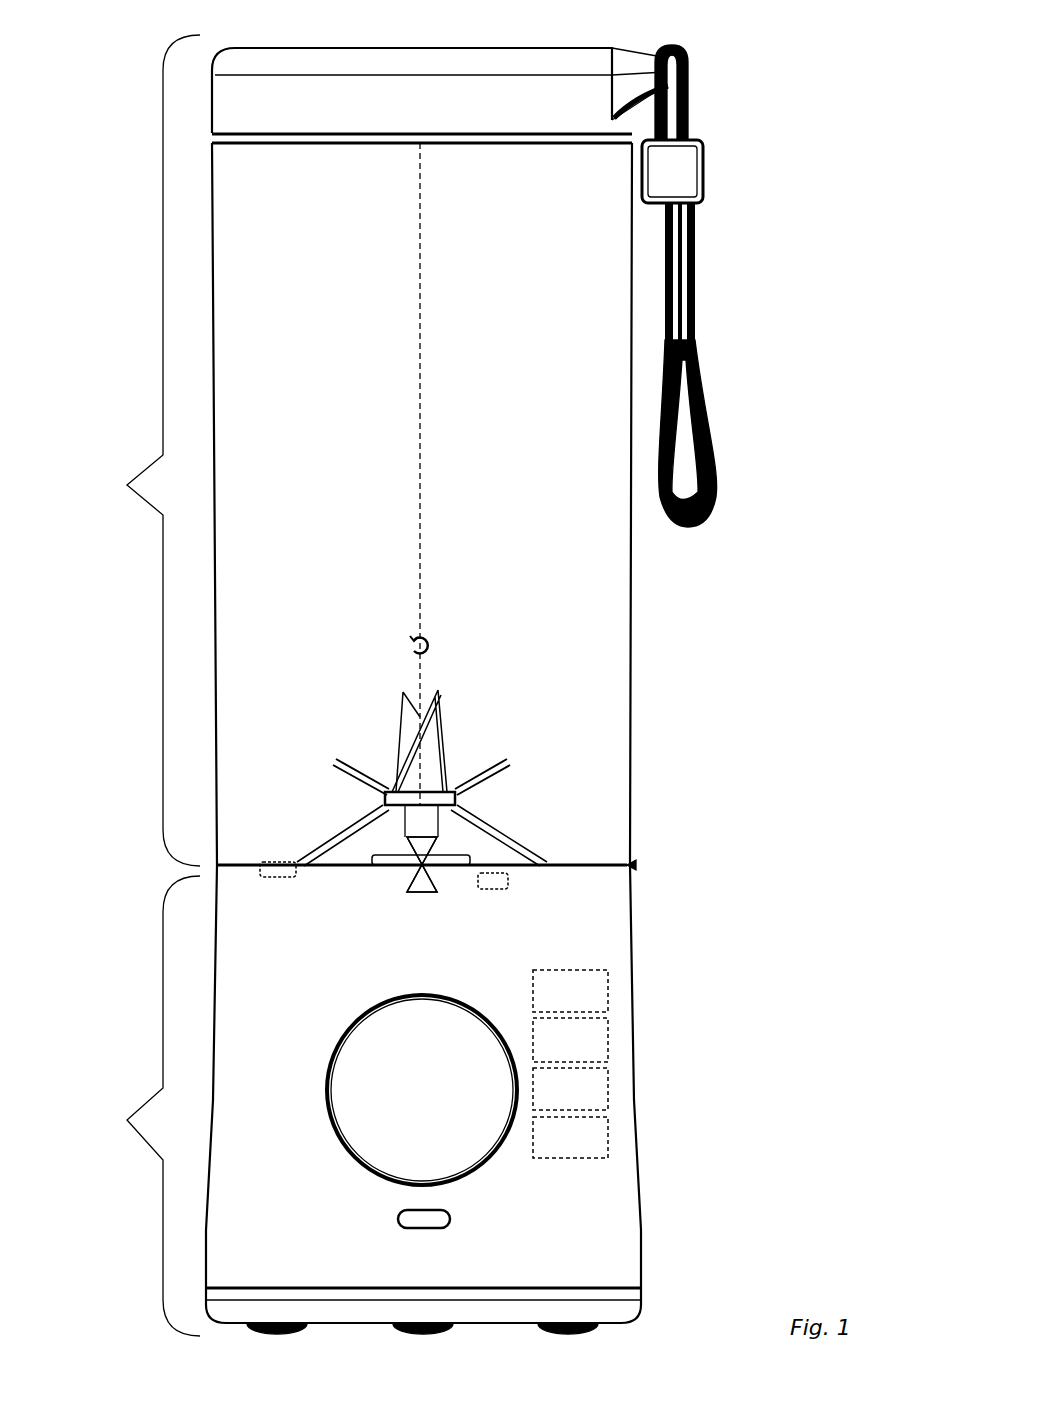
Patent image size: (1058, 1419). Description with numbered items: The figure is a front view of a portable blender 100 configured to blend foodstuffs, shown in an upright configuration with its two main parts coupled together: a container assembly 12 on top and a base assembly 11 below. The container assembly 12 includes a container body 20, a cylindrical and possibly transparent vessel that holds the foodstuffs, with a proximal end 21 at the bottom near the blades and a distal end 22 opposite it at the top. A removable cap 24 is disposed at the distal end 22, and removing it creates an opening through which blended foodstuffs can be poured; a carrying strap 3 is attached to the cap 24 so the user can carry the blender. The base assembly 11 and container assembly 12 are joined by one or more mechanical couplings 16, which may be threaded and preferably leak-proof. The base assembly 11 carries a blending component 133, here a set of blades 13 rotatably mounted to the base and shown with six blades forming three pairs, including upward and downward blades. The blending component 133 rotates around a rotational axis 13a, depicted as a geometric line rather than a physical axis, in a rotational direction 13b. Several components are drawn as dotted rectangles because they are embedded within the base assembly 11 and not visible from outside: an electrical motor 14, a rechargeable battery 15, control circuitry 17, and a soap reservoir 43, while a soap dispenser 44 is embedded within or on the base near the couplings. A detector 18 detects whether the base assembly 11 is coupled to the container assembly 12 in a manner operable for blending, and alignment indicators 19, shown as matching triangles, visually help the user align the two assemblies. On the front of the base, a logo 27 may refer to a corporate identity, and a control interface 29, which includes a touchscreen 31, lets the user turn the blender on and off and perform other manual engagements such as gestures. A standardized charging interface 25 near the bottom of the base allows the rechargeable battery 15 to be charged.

The portable blender 100 is at (815, 68).
The container assembly 12 is at (122, 450).
The base assembly 11 is at (127, 1106).
The cap 24 is at (488, 68).
The distal end 22 is at (422, 157).
The proximal end 21 is at (272, 813).
The carrying strap 3 is at (777, 506).
The container body 20 is at (582, 558).
The rotational axis 13a is at (420, 603).
The rotational direction 13b is at (432, 646).
The blending component 133 is at (613, 791).
The set of blades 13 is at (510, 767).
The mechanical couplings 16 is at (636, 865).
The soap dispenser 44 is at (320, 893).
The detector 18 is at (508, 888).
The alignment indicators 19 is at (437, 893).
The logo 27 is at (335, 973).
The soap reservoir 43 is at (608, 998).
The electrical motor 14 is at (608, 1046).
The control circuitry 17 is at (608, 1097).
The rechargeable battery 15 is at (608, 1145).
The control interface 29 is at (490, 1165).
The touchscreen 31 is at (420, 1180).
The standardized charging interface 25 is at (450, 1220).